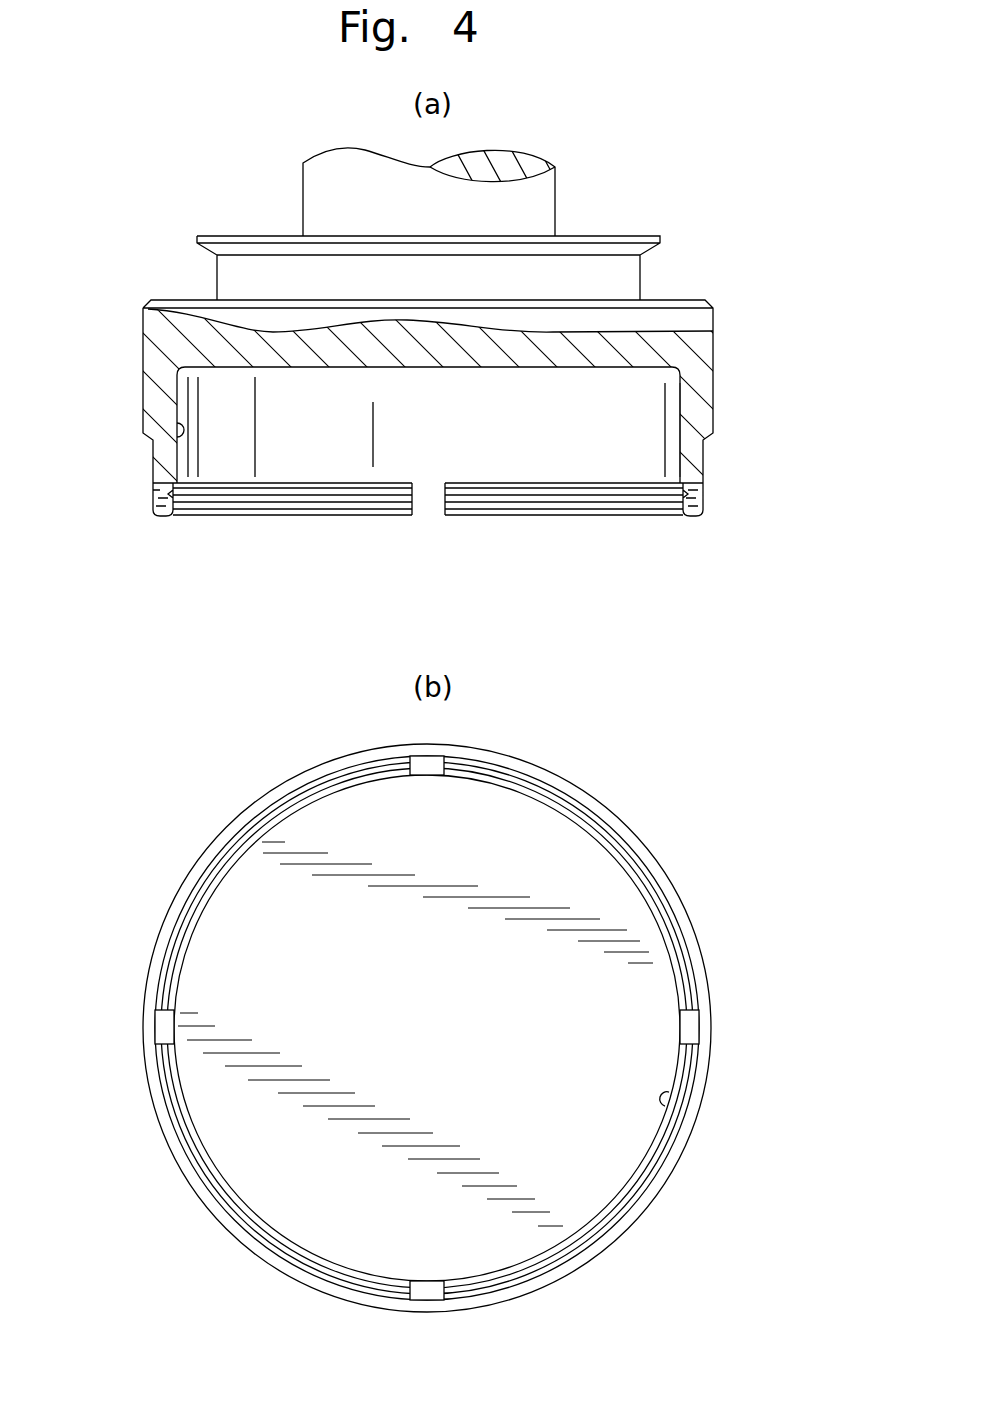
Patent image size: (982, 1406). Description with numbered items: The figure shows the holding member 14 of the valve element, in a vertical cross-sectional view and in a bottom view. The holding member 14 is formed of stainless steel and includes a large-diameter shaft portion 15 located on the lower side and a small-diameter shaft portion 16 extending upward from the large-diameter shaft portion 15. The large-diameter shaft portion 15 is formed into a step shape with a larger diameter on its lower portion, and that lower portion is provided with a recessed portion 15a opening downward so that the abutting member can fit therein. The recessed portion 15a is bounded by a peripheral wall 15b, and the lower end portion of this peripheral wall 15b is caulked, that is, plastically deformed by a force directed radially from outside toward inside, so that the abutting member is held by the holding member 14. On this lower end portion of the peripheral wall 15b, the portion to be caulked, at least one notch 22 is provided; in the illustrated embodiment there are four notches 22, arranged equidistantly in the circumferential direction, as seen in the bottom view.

The holding member 14 is at (714, 320).
The large-diameter shaft portion 15 is at (714, 397).
The recessed portion 15a is at (180, 440).
The peripheral wall 15b is at (690, 463).
The small-diameter shaft portion 16 is at (557, 191).
The notch 22 is at (155, 513).